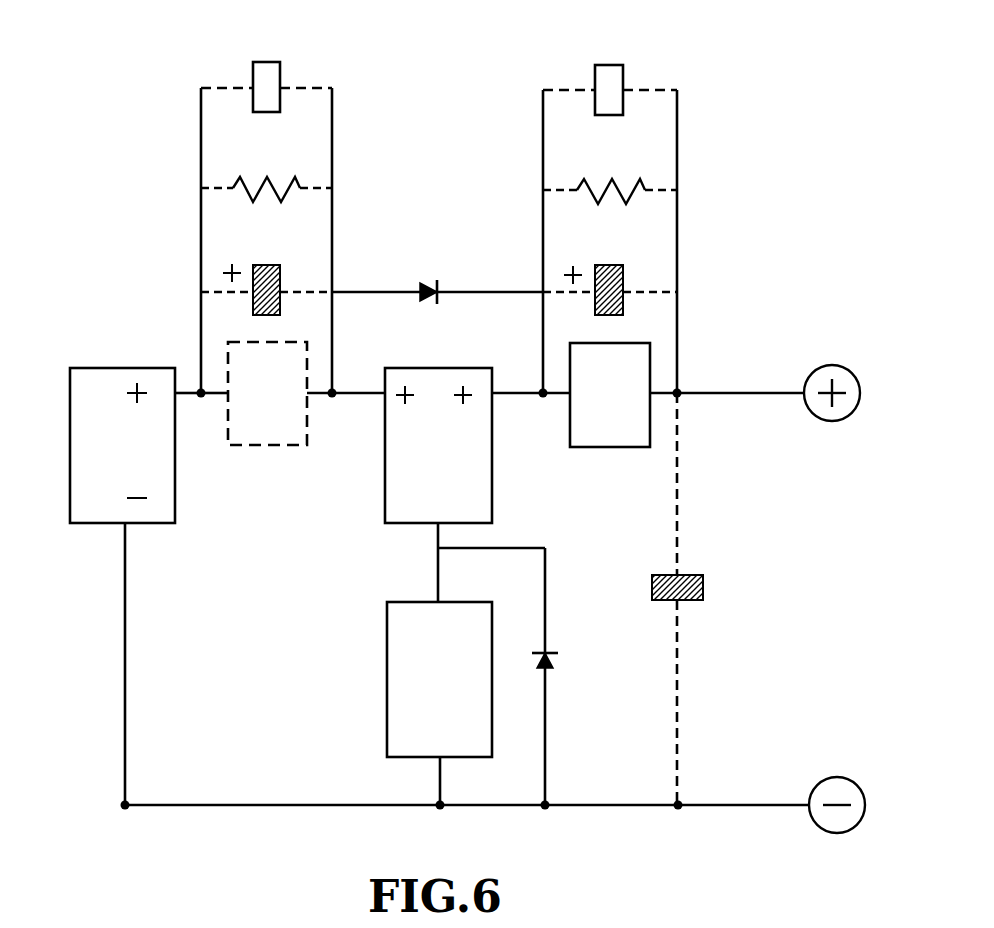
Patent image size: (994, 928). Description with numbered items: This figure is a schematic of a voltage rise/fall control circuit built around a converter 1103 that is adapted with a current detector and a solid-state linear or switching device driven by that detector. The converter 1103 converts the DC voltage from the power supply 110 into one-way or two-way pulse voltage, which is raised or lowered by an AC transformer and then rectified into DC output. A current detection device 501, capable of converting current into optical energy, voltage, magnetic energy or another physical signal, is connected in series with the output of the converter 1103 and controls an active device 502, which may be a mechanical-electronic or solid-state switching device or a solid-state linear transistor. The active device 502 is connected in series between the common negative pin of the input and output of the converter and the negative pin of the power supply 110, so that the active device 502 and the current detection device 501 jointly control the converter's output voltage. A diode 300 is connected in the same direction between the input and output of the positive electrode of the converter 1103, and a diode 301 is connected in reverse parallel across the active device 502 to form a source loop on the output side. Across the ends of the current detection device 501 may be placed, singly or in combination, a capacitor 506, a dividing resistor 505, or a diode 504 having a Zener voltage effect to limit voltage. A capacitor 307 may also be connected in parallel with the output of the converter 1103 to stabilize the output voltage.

The power supply 110 is at (122, 366).
The diode 504 is at (268, 62).
The dividing resistor 505 is at (265, 178).
The capacitor 506 is at (255, 263).
The diode 300 is at (437, 269).
The current detection device 501 is at (242, 342).
The converter 1103 is at (492, 448).
The active device 502 is at (385, 703).
The diode 301 is at (562, 668).
The capacitor 307 is at (703, 573).